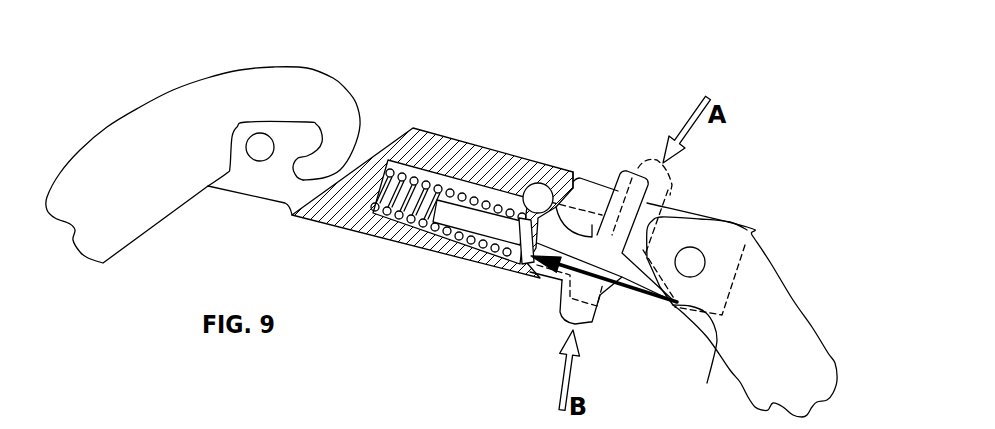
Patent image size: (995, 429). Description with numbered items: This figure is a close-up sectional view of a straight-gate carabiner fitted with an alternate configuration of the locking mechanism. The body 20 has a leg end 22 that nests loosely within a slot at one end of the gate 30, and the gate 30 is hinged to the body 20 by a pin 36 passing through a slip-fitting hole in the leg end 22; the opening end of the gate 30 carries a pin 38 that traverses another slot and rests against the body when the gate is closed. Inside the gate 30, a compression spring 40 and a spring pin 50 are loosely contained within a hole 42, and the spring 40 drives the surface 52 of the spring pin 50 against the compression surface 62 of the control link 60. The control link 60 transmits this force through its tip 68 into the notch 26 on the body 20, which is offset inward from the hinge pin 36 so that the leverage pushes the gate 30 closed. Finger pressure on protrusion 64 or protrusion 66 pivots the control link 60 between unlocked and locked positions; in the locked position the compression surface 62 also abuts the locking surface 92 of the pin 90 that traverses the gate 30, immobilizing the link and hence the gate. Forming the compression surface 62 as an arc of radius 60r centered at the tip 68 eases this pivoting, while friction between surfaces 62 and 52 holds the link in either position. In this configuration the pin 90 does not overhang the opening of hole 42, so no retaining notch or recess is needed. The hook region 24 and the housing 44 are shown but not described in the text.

The body 20 is at (143, 133).
The leg end 22 is at (677, 232).
The hook 24 is at (338, 130).
The notch 26 is at (698, 360).
The gate 30 is at (357, 197).
The pin 36 is at (690, 262).
The pin 38 is at (258, 147).
The compression spring 40 is at (392, 228).
The hole 42 is at (427, 247).
The spring housing 44 is at (377, 187).
The spring pin 50 is at (485, 255).
The surface 52 is at (494, 265).
The control link 60 is at (585, 255).
The radius 60r is at (604, 285).
The compression surface 62 is at (593, 225).
The protrusion 64 is at (635, 180).
The protrusion 66 is at (592, 320).
The tip 68 is at (638, 300).
The pin 90 is at (536, 195).
The locking surface 92 is at (541, 200).